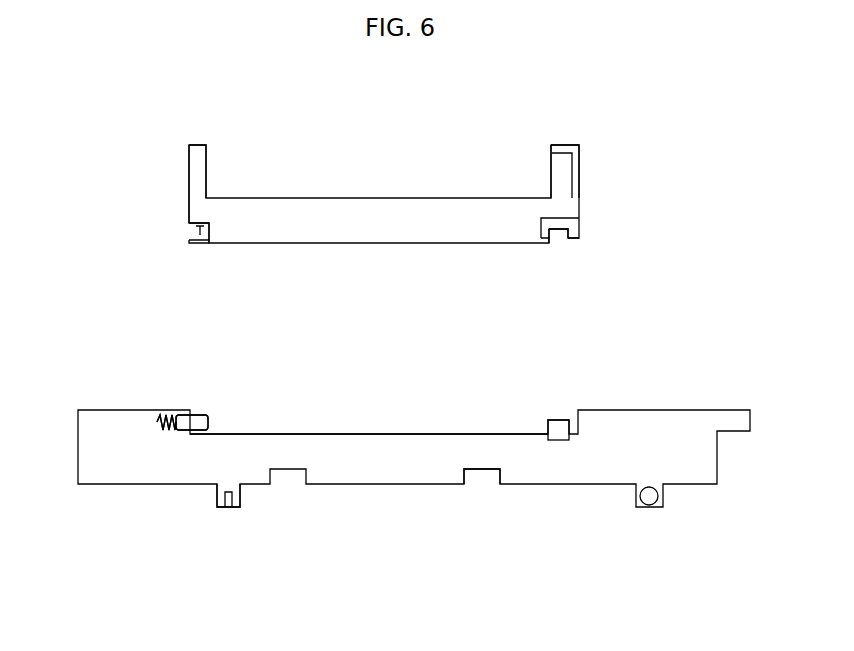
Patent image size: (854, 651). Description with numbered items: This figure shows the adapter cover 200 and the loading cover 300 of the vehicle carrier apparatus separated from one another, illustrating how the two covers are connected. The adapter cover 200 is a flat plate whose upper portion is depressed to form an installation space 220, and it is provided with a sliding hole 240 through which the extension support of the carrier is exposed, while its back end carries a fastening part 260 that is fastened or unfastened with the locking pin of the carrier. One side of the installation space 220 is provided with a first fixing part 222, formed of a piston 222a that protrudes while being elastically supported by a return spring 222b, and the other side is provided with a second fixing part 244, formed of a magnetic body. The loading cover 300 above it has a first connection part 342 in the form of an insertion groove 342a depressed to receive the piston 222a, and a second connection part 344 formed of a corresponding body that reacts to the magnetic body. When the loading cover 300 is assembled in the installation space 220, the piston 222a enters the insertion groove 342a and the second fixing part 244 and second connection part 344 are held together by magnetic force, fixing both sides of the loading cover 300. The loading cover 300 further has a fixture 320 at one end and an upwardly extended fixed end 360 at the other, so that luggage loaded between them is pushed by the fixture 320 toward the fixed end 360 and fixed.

The adapter cover 200 is at (748, 402).
The installation space 220 is at (397, 433).
The first fixing part 222 is at (155, 316).
The piston 222a is at (185, 412).
The return spring 222b is at (160, 420).
The sliding hole 240 is at (477, 470).
The second fixing part 244 is at (560, 431).
The fastening part 260 is at (233, 500).
The loading cover 300 is at (381, 180).
The fixture 320 is at (563, 151).
The first connection part 342 is at (193, 223).
The insertion groove 342a is at (202, 229).
The second connection part 344 is at (557, 236).
The fixed end 360 is at (197, 151).